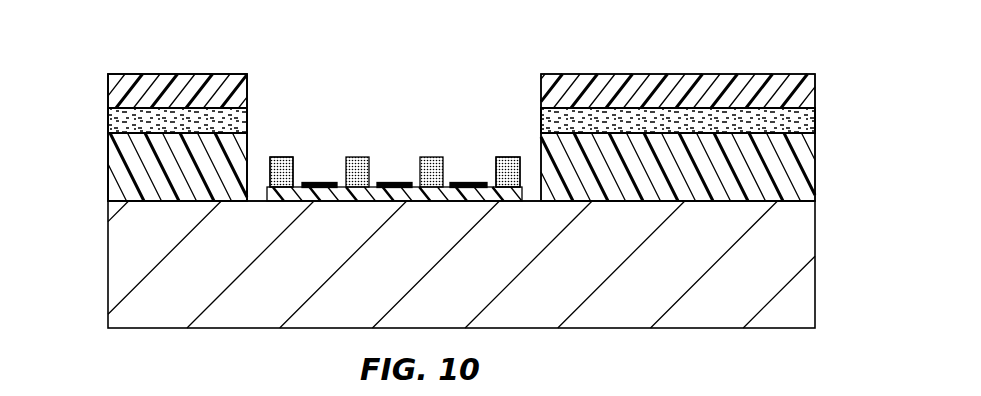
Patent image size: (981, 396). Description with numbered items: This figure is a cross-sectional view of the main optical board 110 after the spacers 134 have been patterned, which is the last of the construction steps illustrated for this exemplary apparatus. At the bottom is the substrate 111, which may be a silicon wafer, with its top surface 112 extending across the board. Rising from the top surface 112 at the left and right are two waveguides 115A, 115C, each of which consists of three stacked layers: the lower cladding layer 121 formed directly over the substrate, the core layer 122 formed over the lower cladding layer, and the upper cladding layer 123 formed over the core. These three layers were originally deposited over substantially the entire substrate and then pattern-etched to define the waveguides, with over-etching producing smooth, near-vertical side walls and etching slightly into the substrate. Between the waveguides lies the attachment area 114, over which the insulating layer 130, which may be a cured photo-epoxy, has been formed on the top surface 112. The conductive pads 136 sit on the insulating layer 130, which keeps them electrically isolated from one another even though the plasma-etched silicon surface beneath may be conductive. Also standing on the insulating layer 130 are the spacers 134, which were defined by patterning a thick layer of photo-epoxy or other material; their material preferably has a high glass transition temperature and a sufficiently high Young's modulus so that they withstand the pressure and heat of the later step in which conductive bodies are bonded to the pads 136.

The main optical board 110 is at (108, 73).
The substrate 111 is at (108, 282).
The top surface 112 is at (121, 195).
The attachment area 114 is at (513, 139).
The waveguide 115A is at (92, 113).
The waveguide 115C is at (840, 113).
The lower cladding layer 121 is at (108, 160).
The core layer 122 is at (108, 127).
The upper cladding layer 123 is at (108, 86).
The insulating layer 130 is at (347, 202).
The spacers 134 is at (346, 157).
The conductive pads 136 is at (462, 183).